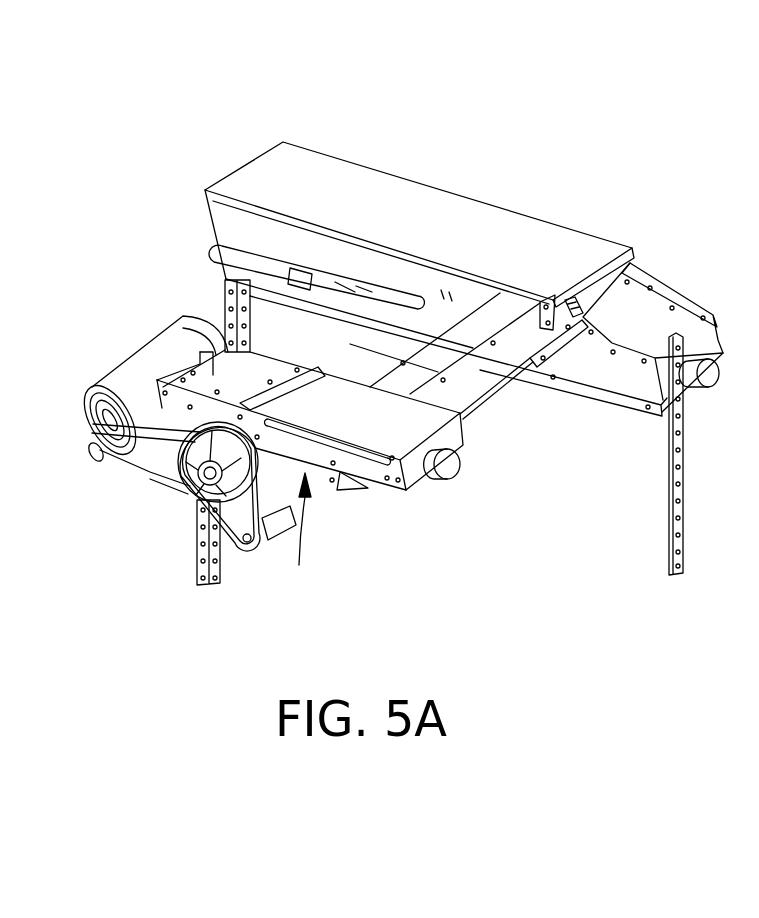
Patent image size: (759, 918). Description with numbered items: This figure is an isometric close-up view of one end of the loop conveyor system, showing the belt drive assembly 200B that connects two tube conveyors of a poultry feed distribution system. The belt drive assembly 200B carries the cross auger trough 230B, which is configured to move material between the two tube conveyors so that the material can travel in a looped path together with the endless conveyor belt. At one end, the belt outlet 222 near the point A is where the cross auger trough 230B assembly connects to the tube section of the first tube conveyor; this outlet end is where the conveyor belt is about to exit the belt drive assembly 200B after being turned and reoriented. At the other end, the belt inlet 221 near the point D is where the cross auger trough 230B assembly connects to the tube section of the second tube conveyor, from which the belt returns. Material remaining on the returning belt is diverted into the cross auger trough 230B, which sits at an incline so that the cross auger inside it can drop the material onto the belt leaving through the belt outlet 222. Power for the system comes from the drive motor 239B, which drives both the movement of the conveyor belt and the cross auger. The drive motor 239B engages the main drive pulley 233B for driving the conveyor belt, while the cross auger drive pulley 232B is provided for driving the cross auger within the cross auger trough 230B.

The belt drive assembly 200B is at (502, 179).
The cross auger trough 230B is at (503, 307).
The point A is at (668, 282).
The belt outlet 222 is at (717, 378).
The belt inlet 221 is at (453, 467).
The drive motor 239B is at (148, 358).
The main drive pulley 233B is at (180, 500).
The cross auger drive pulley 232B is at (245, 557).
The point D is at (307, 544).